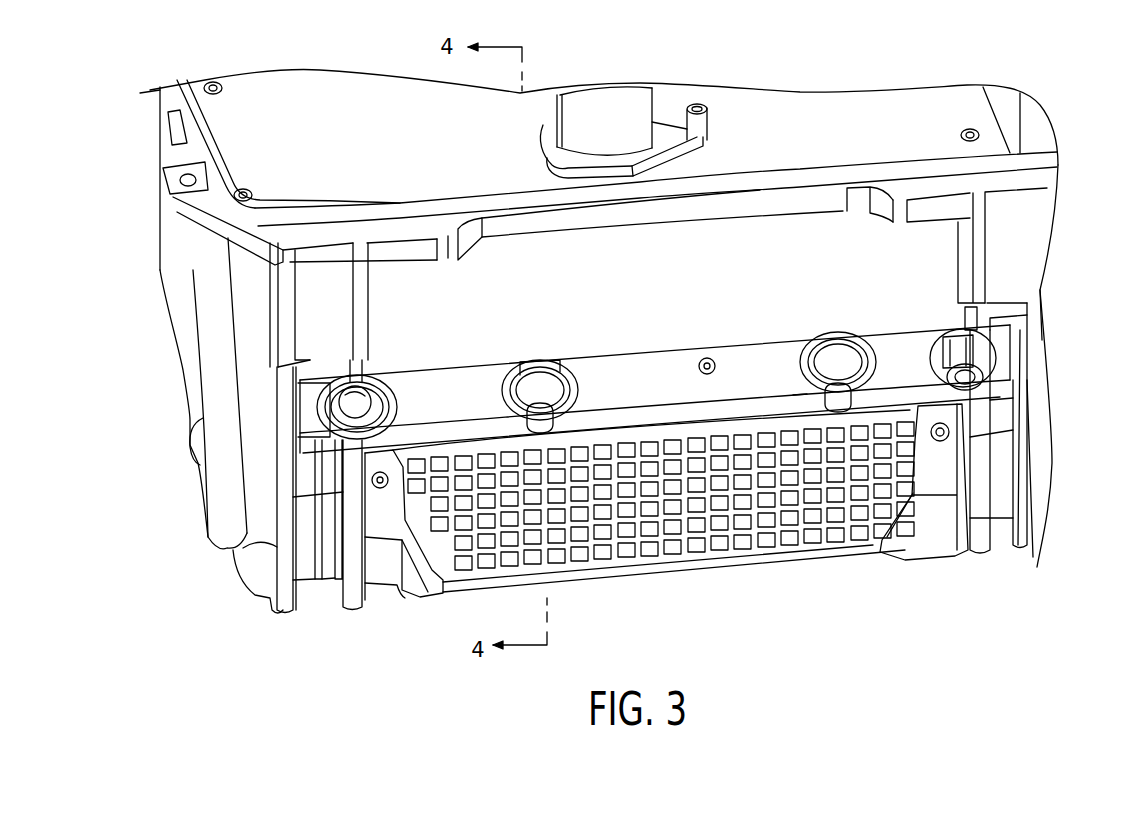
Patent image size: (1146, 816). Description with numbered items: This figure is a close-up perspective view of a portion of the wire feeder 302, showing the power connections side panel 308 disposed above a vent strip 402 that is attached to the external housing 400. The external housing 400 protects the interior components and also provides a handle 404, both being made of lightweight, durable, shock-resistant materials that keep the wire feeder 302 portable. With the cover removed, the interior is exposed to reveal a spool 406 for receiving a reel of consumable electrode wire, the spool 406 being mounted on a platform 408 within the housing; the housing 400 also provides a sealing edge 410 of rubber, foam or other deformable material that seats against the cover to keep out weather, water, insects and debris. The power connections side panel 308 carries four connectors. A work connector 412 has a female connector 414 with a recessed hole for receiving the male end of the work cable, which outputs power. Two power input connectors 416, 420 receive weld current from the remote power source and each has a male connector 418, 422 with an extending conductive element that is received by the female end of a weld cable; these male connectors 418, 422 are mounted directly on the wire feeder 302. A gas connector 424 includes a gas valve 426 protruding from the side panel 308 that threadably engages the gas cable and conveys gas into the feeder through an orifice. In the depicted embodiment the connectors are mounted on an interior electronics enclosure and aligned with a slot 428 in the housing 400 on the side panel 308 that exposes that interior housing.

The wire feeder 302 is at (250, 718).
The power connections side panel 308 is at (1007, 350).
The external housing 400 is at (1033, 525).
The vent strip 402 is at (718, 530).
The handle 404 is at (203, 500).
The spool 406 is at (640, 110).
The platform 408 is at (850, 120).
The sealing edge 410 is at (207, 163).
The work connector 412 is at (353, 430).
The female connector 414 is at (405, 520).
The power input connector 416 is at (543, 410).
The male connector 418 is at (575, 385).
The power input connector 420 is at (875, 400).
The male connector 422 is at (800, 395).
The gas connector 424 is at (985, 450).
The gas valve 426 is at (987, 367).
The slot 428 is at (1040, 290).